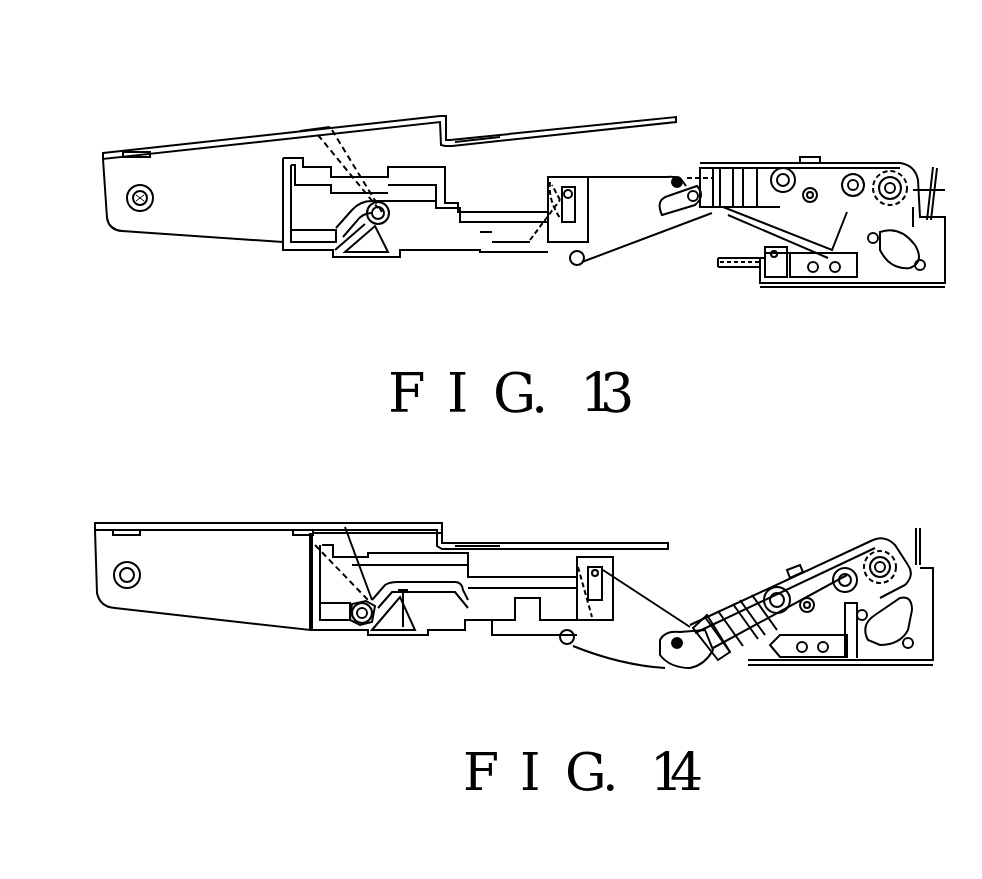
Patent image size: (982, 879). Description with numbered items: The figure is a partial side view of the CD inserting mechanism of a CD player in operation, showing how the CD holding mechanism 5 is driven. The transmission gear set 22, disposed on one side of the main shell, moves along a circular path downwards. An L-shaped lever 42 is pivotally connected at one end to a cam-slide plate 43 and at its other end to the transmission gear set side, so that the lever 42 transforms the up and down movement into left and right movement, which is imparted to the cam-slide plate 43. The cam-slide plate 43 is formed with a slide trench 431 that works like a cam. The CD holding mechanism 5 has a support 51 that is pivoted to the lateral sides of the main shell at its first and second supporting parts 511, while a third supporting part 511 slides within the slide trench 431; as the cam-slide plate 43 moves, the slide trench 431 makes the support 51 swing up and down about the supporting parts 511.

In FIG. 13, the CD holding mechanism 5 is at (380, 108).
In FIG. 14, the CD holding mechanism 5 is at (312, 510).
In FIG. 13, the transmission gear set 22 is at (843, 143).
In FIG. 14, the transmission gear set 22 is at (815, 550).
In FIG. 13, the L-shaped lever 42 is at (623, 228).
In FIG. 14, the L-shaped lever 42 is at (653, 615).
In FIG. 13, the cam-slide plate 43 is at (375, 224).
In FIG. 14, the cam-slide plate 43 is at (370, 640).
In FIG. 13, the slide trench 431 is at (350, 224).
In FIG. 14, the slide trench 431 is at (398, 633).
In FIG. 13, the support 51 is at (227, 207).
In FIG. 14, the support 51 is at (253, 610).
In FIG. 13, the supporting part 511 is at (140, 212).
In FIG. 14, the supporting part 511 is at (120, 588).